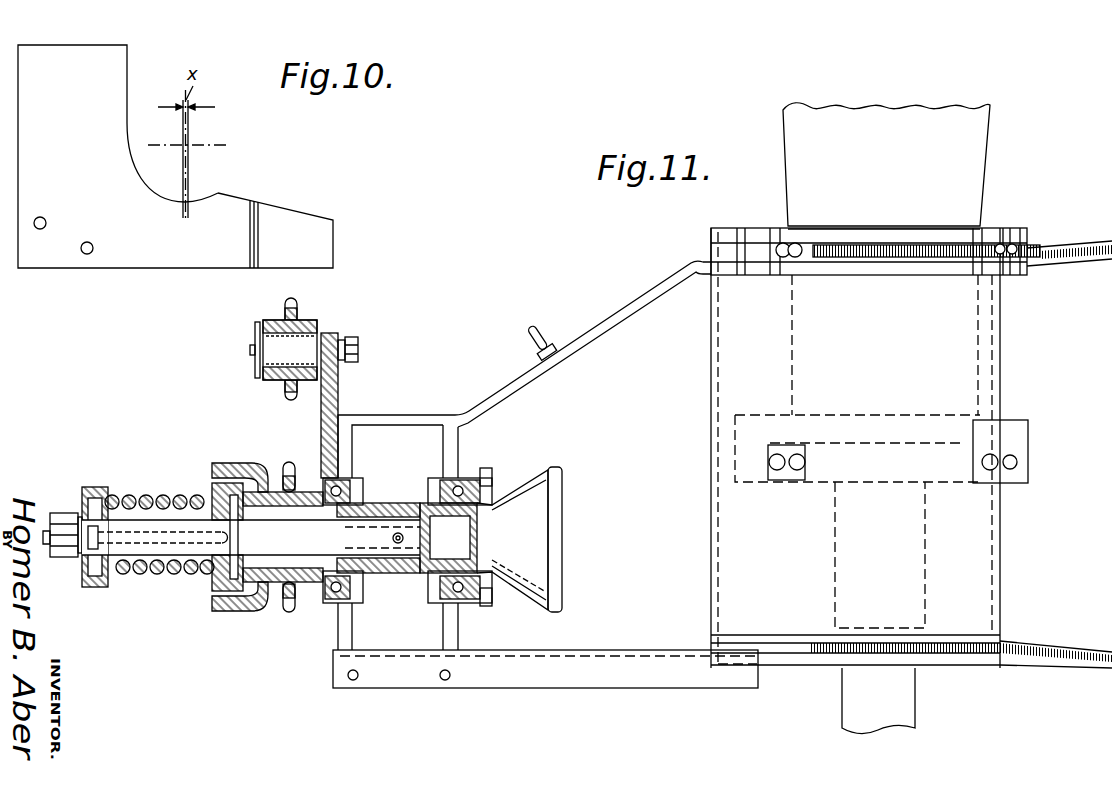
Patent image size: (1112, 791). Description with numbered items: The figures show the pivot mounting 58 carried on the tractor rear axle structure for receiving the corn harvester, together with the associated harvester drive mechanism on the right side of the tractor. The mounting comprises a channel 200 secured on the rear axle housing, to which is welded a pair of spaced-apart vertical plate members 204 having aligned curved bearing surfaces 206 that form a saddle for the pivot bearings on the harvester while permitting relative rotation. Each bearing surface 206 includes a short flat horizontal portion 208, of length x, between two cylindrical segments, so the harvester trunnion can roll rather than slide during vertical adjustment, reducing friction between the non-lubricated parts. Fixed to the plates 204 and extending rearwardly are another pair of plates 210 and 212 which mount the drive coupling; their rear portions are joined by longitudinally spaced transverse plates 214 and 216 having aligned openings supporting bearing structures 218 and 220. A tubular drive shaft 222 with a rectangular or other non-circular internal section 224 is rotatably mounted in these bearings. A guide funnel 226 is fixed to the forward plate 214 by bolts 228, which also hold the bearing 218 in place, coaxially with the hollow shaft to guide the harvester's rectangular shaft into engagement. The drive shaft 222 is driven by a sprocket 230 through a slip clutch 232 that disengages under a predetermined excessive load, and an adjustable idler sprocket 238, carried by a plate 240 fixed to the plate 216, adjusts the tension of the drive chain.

In FIG. 10, the pivot mounting 58 is at (80, 133).
In FIG. 11, the pivot mounting 58 is at (972, 570).
In FIG. 11, the channel 200 is at (972, 672).
In FIG. 11, the vertical plate members 204 is at (1061, 268).
In FIG. 10, the curved bearing surfaces 206 is at (185, 145).
In FIG. 11, the curved bearing surfaces 206 is at (890, 257).
In FIG. 10, the flat horizontal portion 208 is at (185, 145).
In FIG. 11, the plate 210 is at (618, 316).
In FIG. 11, the plate 212 is at (608, 650).
In FIG. 11, the forward transverse plate 214 is at (457, 452).
In FIG. 11, the transverse plate 216 is at (348, 440).
In FIG. 11, the bearing structure 218 is at (468, 480).
In FIG. 11, the bearing structure 220 is at (350, 480).
In FIG. 11, the tubular drive shaft 222 is at (383, 568).
In FIG. 11, the non-circular internal section 224 is at (377, 522).
In FIG. 11, the guide funnel 226 is at (562, 578).
In FIG. 11, the bolts 228 is at (484, 606).
In FIG. 11, the sprocket 230 is at (289, 466).
In FIG. 11, the slip clutch 232 is at (200, 588).
In FIG. 11, the adjustable idler sprocket 238 is at (283, 385).
In FIG. 11, the plate 240 is at (340, 392).